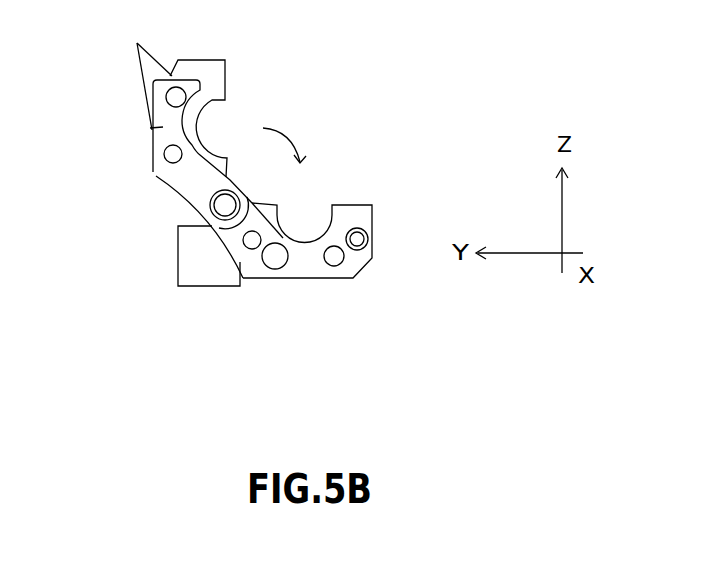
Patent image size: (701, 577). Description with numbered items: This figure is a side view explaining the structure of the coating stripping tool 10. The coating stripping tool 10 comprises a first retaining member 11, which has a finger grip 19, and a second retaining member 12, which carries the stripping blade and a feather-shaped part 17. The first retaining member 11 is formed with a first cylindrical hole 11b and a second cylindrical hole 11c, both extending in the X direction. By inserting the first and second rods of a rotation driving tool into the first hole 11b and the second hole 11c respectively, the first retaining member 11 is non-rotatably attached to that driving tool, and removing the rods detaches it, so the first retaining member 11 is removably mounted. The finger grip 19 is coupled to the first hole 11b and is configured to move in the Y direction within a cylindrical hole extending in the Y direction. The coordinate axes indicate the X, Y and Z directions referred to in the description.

The coating stripping tool 10 is at (368, 96).
The first retaining member 11 is at (308, 304).
The first cylindrical hole 11b is at (276, 264).
The second cylindrical hole 11c is at (337, 264).
The second retaining member 12 is at (150, 129).
The feather-shaped part 17 is at (153, 67).
The finger grip 19 is at (207, 263).